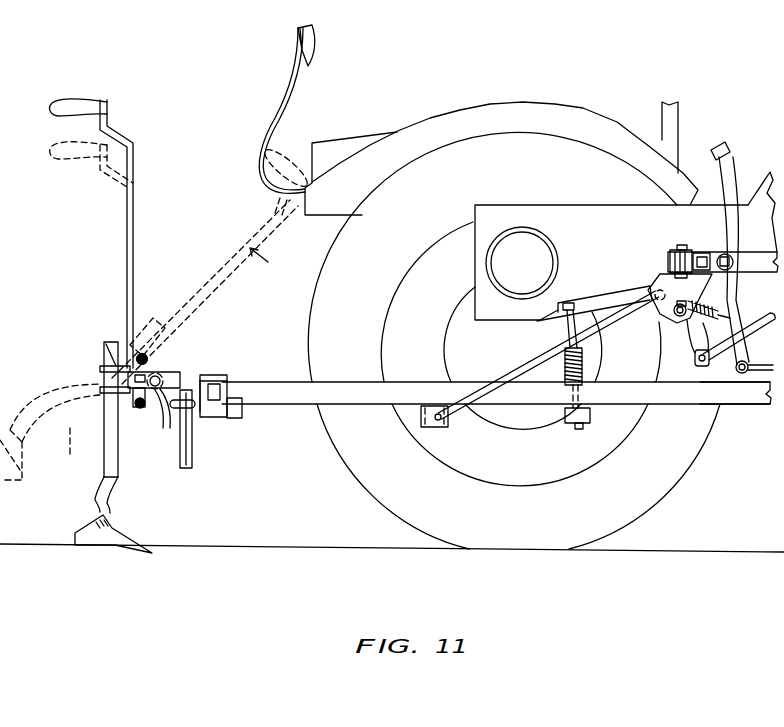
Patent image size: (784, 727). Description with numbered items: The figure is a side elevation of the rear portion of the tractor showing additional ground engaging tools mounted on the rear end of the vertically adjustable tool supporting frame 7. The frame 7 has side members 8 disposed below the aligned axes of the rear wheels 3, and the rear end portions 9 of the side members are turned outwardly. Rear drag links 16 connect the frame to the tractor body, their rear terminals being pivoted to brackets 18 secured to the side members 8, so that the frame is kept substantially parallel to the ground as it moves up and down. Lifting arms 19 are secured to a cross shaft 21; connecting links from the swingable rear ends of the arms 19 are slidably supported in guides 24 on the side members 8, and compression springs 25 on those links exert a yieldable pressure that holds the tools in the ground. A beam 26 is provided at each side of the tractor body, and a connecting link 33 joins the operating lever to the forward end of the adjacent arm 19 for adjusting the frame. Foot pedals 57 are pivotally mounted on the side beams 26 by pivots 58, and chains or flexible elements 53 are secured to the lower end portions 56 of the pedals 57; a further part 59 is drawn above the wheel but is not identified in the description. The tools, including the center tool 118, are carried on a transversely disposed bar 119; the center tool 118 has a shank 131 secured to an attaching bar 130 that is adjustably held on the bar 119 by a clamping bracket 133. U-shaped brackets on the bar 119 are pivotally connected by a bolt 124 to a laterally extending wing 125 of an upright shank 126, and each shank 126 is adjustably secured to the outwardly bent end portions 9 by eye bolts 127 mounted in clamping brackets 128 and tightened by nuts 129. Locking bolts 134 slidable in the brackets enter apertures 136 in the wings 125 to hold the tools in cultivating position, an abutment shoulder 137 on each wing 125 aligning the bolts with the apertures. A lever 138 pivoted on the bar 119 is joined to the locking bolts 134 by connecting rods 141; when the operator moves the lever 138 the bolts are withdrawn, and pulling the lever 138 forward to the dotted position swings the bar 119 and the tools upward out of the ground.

The rear wheels 3 is at (390, 490).
The tool supporting frame 7 is at (712, 409).
The side members 8 is at (351, 381).
The rear end portions 9 is at (207, 378).
The rear drag links 16 is at (516, 367).
The brackets 18 is at (428, 428).
The lifting arms 19 is at (594, 302).
The cross shaft 21 is at (670, 320).
The guides 24 is at (590, 418).
The compression springs 25 is at (583, 364).
The beam 26 is at (758, 260).
The connecting link 33 is at (769, 314).
The chains or flexible elements 53 is at (727, 450).
The lower end portions 56 is at (743, 349).
The foot pedals 57 is at (720, 148).
The pivots 58 is at (722, 254).
The fender plate 59 is at (335, 145).
The center tool 118 is at (125, 540).
The transversely disposed bar 119 is at (117, 380).
The bolt 124 is at (163, 430).
The laterally extending wing 125 is at (176, 372).
The upright shank 126 is at (187, 464).
The eye bolts 127 is at (175, 410).
The clamping brackets 128 is at (222, 376).
The nuts 129 is at (240, 416).
The attaching bar 130 is at (112, 453).
The shank 131 is at (97, 500).
The clamping bracket 133 is at (100, 392).
The locking bolts 134 is at (146, 362).
The aperture 136 is at (143, 408).
The abutment shoulder 137 is at (133, 400).
The lever 138 is at (133, 217).
The connecting rods 141 is at (143, 355).